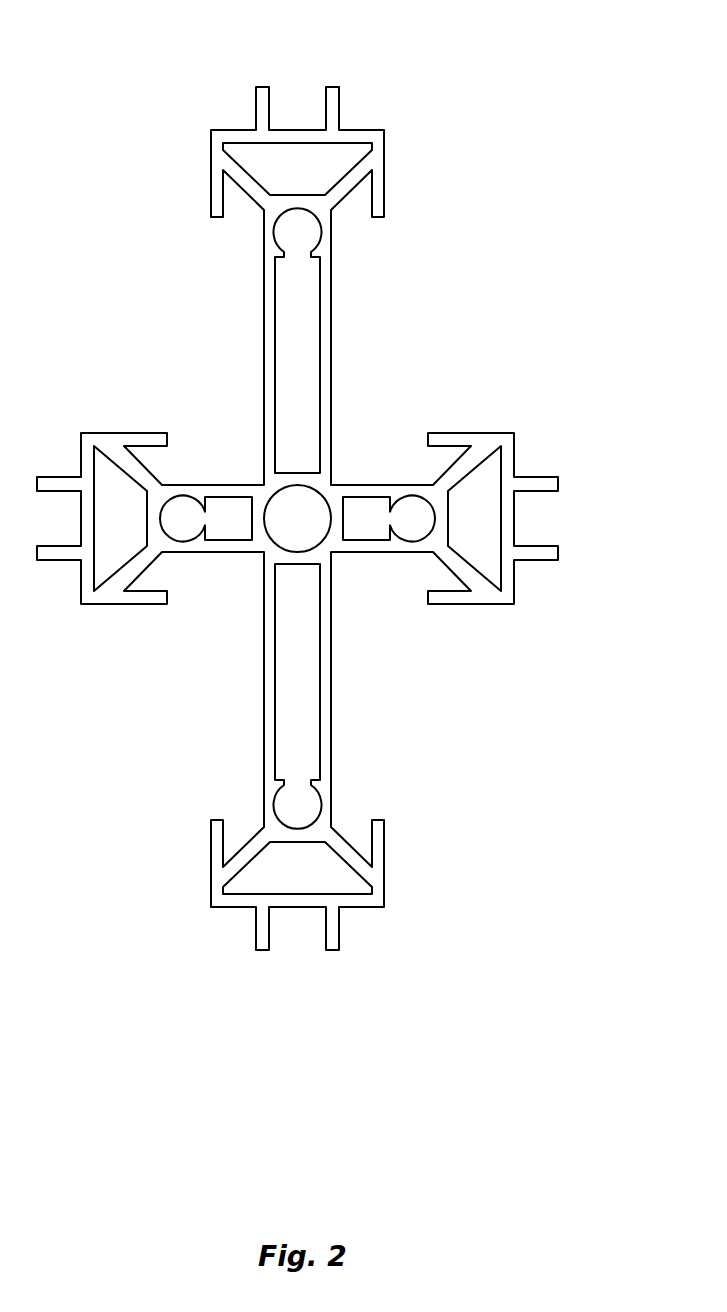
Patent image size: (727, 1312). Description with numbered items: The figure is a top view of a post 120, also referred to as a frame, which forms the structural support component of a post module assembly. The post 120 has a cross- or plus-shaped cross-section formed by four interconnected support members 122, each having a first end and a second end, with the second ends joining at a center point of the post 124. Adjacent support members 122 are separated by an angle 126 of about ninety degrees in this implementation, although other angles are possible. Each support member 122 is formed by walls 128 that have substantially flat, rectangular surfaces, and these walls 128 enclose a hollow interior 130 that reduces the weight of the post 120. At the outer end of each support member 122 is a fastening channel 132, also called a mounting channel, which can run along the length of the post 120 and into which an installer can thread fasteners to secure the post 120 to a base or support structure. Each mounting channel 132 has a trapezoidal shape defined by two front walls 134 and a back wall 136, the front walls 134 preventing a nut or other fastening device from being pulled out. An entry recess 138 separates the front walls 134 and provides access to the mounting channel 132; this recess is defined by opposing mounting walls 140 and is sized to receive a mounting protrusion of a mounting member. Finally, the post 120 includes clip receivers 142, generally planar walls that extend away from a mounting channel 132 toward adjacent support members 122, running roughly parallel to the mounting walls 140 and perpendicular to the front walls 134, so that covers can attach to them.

The post 120 is at (498, 77).
The support member 122 is at (343, 378).
The center point of the post 124 is at (278, 548).
The angle 126 is at (393, 553).
The wall 128 is at (265, 690).
The hollow interior 130 is at (302, 313).
The fastening channel 132 is at (298, 134).
The front wall 134 is at (232, 128).
The back wall 136 is at (248, 188).
The entry recess 138 is at (547, 518).
The mounting wall 140 is at (268, 87).
The clip receiver 142 is at (455, 441).